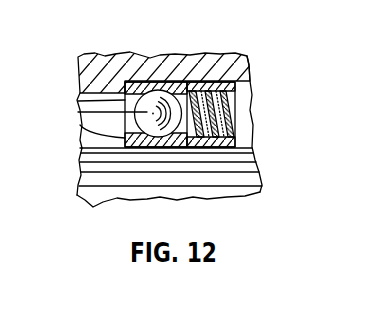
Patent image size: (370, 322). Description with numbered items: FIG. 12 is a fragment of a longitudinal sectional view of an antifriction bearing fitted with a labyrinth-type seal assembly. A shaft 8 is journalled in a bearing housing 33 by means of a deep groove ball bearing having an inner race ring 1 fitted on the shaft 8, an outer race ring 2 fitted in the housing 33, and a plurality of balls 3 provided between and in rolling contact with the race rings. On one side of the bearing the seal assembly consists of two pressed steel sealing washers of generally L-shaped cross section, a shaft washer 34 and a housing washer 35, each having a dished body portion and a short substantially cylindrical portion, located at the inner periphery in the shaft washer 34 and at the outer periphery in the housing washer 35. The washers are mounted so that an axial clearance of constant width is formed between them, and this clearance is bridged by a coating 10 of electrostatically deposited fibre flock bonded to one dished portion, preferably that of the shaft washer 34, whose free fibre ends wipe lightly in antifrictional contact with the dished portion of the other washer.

The inner race ring 1 is at (80, 125).
The outer race ring 2 is at (148, 90).
The balls 3 is at (78, 101).
The shaft 8 is at (250, 171).
The coating 10 is at (228, 110).
The bearing housing 33 is at (80, 56).
The shaft washer 34 is at (232, 138).
The housing washer 35 is at (250, 81).